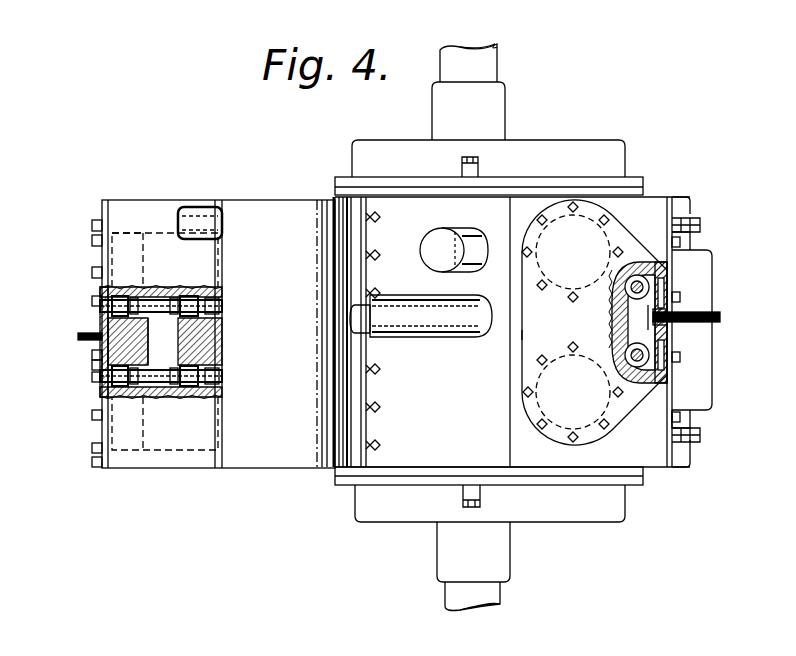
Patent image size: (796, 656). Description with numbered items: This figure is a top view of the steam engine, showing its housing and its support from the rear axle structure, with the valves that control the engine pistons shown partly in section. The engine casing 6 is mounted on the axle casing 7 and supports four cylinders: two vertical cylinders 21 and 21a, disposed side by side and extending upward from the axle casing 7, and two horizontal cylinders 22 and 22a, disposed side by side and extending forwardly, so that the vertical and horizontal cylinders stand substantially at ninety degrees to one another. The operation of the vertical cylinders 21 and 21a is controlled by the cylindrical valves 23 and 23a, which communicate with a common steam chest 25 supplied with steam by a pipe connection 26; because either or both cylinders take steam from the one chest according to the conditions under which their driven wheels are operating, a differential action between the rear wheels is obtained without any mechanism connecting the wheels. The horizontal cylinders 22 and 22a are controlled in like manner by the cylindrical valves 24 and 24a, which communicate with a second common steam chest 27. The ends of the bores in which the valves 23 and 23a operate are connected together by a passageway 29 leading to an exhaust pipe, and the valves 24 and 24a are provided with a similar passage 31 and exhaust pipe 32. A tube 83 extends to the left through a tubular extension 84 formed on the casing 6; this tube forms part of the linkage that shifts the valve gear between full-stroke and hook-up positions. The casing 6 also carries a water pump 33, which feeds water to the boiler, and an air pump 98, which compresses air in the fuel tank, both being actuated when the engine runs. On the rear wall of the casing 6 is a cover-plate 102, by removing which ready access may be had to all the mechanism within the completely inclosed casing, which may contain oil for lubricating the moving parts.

The axle casing 7 is at (498, 63).
The engine casing 6 is at (277, 212).
The vertical cylinder 21 is at (618, 415).
The vertical cylinder 21a is at (607, 233).
The horizontal cylinder 22 is at (165, 450).
The horizontal cylinder 22a is at (150, 233).
The cylindrical valve 23 is at (663, 376).
The cylindrical valve 23a is at (640, 290).
The cylindrical valve 24 is at (164, 386).
The cylindrical valve 24a is at (160, 296).
The common steam chest 25 is at (642, 334).
The pipe connection 26 is at (720, 318).
The common steam chest 27 is at (153, 333).
The passageway 29 is at (662, 282).
The passage 31 is at (98, 366).
The exhaust pipe 32 is at (84, 327).
The water pump 33 is at (205, 212).
The tube 83 is at (352, 322).
The tubular extension 84 is at (417, 337).
The air pump 98 is at (458, 228).
The cover-plate 102 is at (708, 262).